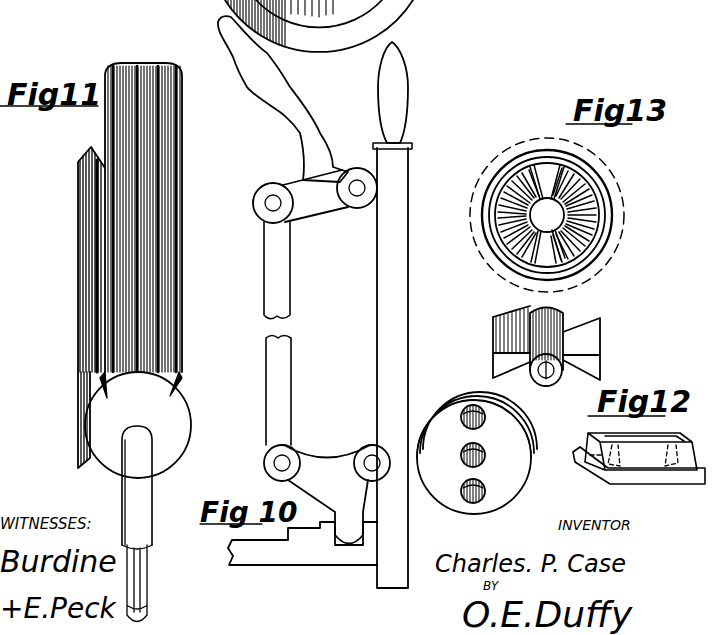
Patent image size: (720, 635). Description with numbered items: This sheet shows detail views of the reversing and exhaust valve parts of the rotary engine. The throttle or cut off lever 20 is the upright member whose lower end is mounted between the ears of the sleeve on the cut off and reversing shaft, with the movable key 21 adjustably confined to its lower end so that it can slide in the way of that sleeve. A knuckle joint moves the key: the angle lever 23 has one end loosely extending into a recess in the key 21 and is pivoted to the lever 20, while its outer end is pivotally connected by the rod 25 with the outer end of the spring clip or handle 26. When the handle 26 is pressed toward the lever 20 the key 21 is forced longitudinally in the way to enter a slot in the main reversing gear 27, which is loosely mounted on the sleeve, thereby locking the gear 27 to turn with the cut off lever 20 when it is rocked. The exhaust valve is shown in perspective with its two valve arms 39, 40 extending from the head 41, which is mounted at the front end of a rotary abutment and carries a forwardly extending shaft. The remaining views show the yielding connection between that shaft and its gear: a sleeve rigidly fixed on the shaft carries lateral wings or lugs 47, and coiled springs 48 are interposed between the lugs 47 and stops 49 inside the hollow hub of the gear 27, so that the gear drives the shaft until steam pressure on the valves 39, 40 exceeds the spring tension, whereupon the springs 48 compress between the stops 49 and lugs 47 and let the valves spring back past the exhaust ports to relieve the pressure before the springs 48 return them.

In FIG. 10, the cut off lever 20 is at (408, 276).
In FIG. 10, the movable key 21 is at (311, 563).
In FIG. 10, the angle lever 23 is at (327, 494).
In FIG. 10, the rod 25 is at (297, 306).
In FIG. 10, the spring clip or handle 26 is at (321, 140).
In FIG. 13, the main reversing gear 27 is at (608, 244).
In FIG. 11, the exhaust port valve 39 is at (90, 160).
In FIG. 11, the exhaust port valve 40 is at (143, 203).
In FIG. 11, the head 41 is at (105, 416).
In FIG. 13, the lateral wings or lugs 47 is at (548, 170).
In FIG. 13, the springs 48 is at (497, 205).
In FIG. 13, the stops 49 is at (522, 176).